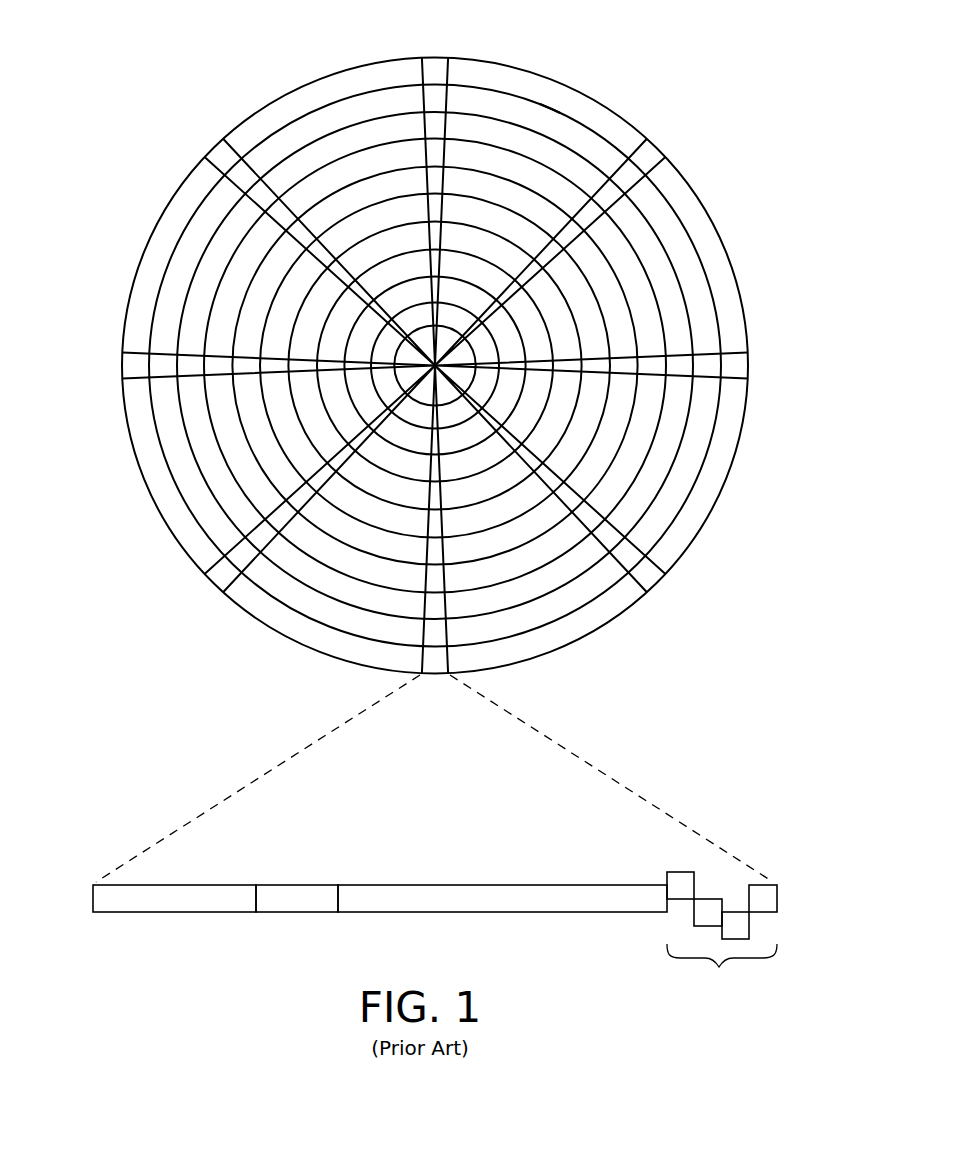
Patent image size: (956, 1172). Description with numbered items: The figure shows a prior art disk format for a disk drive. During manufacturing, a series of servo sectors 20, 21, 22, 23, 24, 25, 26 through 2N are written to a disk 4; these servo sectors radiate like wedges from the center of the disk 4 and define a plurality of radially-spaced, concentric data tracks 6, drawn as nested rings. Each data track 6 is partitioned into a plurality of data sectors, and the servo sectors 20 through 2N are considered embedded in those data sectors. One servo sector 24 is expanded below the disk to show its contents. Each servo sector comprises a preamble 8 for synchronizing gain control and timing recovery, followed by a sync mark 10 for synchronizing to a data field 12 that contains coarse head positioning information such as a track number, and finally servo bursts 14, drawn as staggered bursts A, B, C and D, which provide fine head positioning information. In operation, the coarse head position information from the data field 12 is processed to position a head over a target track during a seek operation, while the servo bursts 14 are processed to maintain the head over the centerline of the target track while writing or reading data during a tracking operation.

The disk 4 is at (203, 59).
The data track 6 is at (562, 100).
The servo sector 20 is at (434, 58).
The servo sector 21 is at (651, 152).
The servo sector 22 is at (740, 366).
The servo sector 23 is at (655, 584).
The servo sector 24 is at (296, 742).
The servo sector 25 is at (216, 583).
The servo sector 26 is at (128, 362).
The servo sector 2N is at (219, 152).
The preamble 8 is at (157, 912).
The sync mark 10 is at (295, 912).
The data field 12 is at (492, 912).
The servo bursts 14 is at (655, 855).